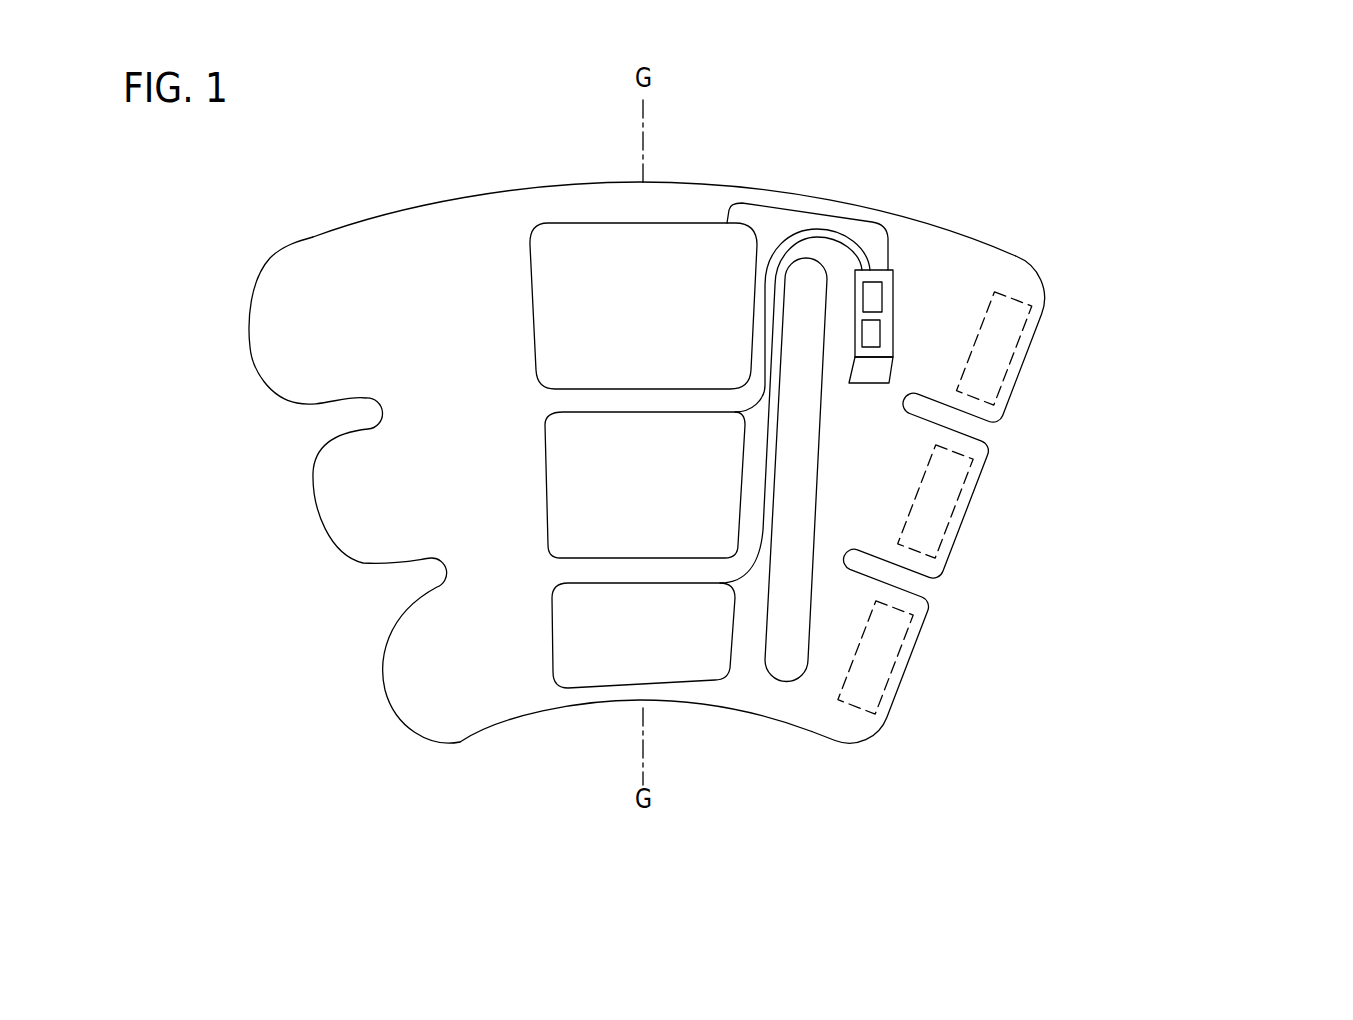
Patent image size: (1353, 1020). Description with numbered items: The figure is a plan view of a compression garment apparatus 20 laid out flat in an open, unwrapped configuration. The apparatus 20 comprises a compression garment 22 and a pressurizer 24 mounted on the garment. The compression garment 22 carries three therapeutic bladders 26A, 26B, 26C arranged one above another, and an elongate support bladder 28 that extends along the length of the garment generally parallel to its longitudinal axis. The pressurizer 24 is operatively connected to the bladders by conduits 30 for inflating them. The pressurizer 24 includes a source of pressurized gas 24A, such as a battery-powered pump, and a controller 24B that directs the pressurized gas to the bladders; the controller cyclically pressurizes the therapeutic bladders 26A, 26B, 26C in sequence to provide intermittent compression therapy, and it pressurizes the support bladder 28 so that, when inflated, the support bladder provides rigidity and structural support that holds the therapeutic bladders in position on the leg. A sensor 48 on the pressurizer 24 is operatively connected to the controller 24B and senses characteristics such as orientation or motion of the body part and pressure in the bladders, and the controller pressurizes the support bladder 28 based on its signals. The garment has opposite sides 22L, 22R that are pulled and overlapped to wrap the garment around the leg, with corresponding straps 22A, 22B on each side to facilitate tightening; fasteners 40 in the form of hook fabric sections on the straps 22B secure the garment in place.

The compression garment apparatus 20 is at (332, 188).
The compression garment 22 is at (720, 172).
The straps 22A is at (292, 343).
The straps 22B is at (1032, 333).
The left side of compression garment 22L is at (219, 428).
The right side of compression garment 22R is at (1209, 368).
The pressurizer 24 is at (901, 256).
The source of pressurized gas 24A is at (867, 375).
The controller 24B is at (872, 337).
The therapeutic bladder 26A is at (585, 633).
The therapeutic bladder 26B is at (578, 490).
The therapeutic bladder 26C is at (568, 327).
The support bladder 28 is at (782, 675).
The conduits 30 is at (819, 192).
The fasteners 40 is at (1005, 295).
The sensor 48 is at (875, 297).